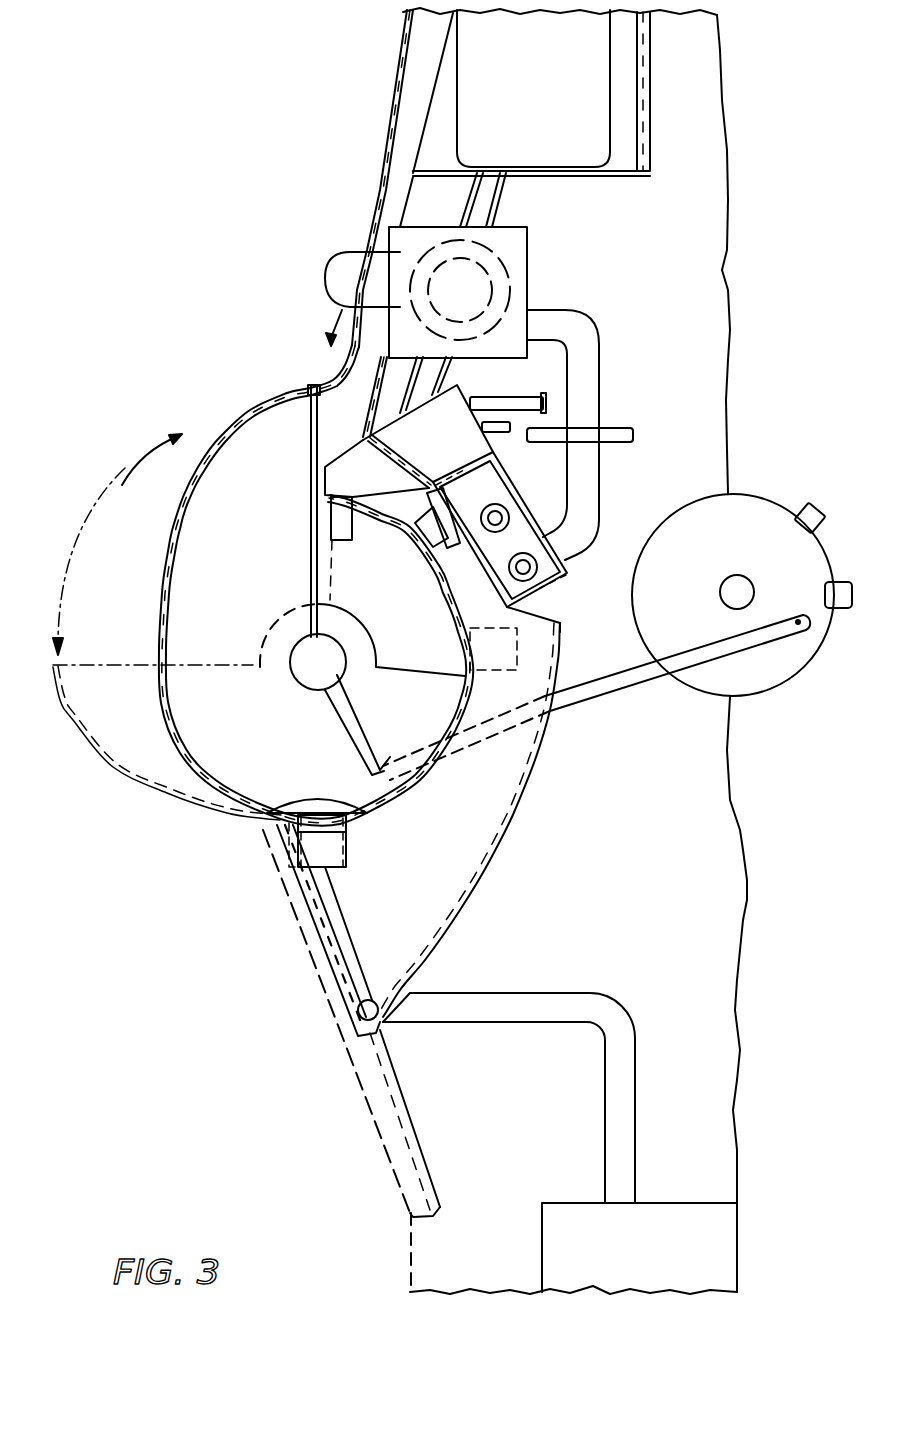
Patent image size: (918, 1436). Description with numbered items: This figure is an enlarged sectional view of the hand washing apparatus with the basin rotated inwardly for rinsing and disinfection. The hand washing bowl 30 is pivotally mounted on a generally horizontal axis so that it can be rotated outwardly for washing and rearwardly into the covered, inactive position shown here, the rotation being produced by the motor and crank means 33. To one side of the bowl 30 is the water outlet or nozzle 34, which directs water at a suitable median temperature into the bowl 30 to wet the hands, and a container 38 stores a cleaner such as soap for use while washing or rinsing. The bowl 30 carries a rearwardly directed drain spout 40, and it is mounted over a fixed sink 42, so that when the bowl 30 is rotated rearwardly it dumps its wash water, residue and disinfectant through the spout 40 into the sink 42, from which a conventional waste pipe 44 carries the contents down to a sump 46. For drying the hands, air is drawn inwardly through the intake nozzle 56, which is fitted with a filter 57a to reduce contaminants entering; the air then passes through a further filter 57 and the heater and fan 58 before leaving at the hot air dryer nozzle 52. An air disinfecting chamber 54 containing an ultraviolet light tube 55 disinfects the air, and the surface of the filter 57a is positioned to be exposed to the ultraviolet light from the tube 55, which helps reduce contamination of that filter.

The hand washing bowl 30 is at (172, 530).
The motor and crank means 33 is at (738, 577).
The water outlet nozzle 34 is at (338, 518).
The container 38 is at (517, 87).
The drain spout 40 is at (346, 848).
The sink 42 is at (493, 882).
The waste pipe 44 is at (636, 1075).
The sump 46 is at (593, 1240).
The hot air dryer nozzle 52 is at (333, 257).
The air disinfecting chamber 54 is at (567, 580).
The ultraviolet light tube 55 is at (531, 556).
The air intake nozzle 56 is at (432, 527).
The filter 57 is at (608, 415).
The filter 57a is at (328, 495).
The heater and fan 58 is at (517, 258).